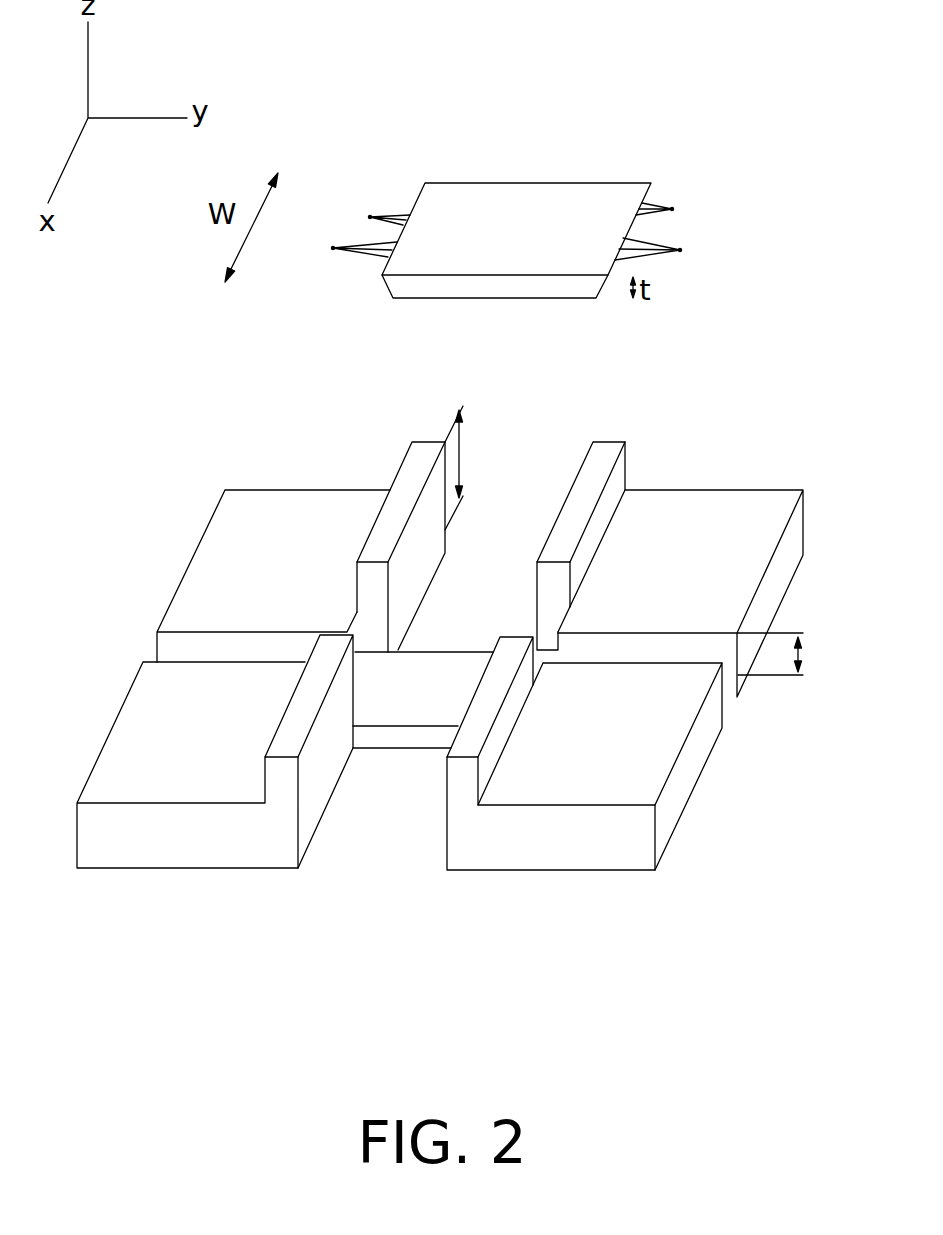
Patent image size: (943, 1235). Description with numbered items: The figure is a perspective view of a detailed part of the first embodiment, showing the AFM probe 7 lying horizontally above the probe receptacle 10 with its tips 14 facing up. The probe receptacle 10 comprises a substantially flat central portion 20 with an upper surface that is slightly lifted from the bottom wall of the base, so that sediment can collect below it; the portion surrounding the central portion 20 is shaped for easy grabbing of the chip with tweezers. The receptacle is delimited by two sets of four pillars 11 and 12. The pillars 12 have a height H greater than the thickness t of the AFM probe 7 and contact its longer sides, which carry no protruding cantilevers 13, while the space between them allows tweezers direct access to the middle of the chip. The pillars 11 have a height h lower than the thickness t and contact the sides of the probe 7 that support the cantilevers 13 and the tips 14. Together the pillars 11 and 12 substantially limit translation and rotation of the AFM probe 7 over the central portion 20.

The AFM probe 7 is at (517, 164).
The cantilevers 13 is at (655, 242).
The tips 14 is at (680, 250).
The probe receptacle 10 is at (417, 674).
The pillars 11 is at (233, 548).
The pillars 12 is at (605, 463).
The central portion 20 is at (397, 708).